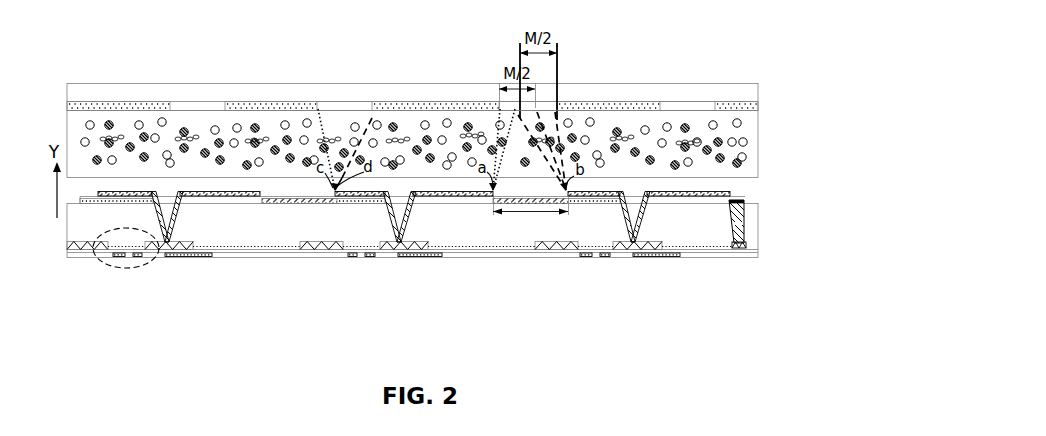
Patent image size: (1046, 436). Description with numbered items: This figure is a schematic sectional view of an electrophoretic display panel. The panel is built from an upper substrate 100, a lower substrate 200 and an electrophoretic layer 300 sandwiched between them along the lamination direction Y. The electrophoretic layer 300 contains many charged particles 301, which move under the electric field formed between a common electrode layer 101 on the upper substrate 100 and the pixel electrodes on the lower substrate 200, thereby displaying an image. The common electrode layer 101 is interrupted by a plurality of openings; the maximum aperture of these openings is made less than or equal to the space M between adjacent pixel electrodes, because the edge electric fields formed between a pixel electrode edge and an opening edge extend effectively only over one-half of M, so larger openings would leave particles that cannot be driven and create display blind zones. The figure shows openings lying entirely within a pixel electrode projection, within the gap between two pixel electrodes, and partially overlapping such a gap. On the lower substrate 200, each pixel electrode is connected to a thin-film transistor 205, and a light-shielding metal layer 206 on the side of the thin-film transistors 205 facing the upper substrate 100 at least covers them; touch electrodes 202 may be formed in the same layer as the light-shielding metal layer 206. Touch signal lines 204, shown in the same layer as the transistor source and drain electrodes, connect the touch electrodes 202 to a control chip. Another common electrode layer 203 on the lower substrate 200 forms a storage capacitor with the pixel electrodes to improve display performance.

The upper substrate 100 is at (762, 83).
The common electrode layer 101 is at (610, 105).
The electrophoretic layer 300 is at (762, 112).
The charged particles 301 is at (162, 118).
The lower substrate 200 is at (762, 183).
The touch electrodes 202 is at (294, 200).
The another common electrode layer 203 is at (192, 257).
The touch signal line 204 is at (742, 248).
The thin-film transistor 205 is at (135, 267).
The light-shielding metal layer 206 is at (121, 199).